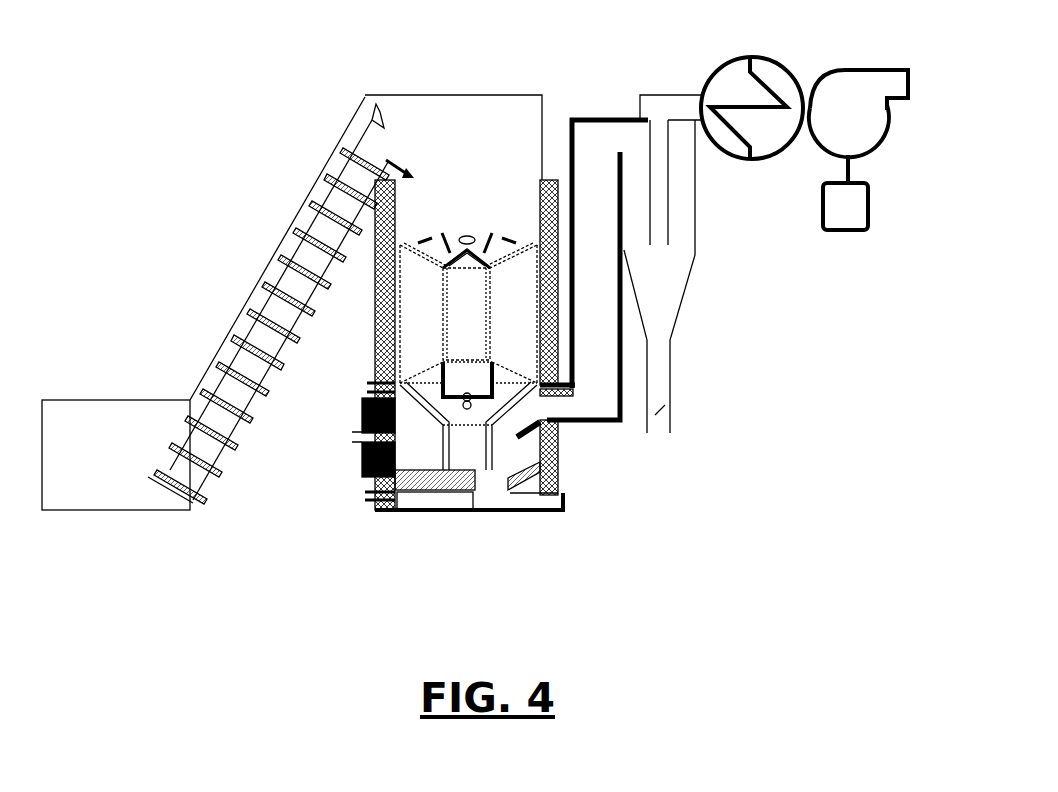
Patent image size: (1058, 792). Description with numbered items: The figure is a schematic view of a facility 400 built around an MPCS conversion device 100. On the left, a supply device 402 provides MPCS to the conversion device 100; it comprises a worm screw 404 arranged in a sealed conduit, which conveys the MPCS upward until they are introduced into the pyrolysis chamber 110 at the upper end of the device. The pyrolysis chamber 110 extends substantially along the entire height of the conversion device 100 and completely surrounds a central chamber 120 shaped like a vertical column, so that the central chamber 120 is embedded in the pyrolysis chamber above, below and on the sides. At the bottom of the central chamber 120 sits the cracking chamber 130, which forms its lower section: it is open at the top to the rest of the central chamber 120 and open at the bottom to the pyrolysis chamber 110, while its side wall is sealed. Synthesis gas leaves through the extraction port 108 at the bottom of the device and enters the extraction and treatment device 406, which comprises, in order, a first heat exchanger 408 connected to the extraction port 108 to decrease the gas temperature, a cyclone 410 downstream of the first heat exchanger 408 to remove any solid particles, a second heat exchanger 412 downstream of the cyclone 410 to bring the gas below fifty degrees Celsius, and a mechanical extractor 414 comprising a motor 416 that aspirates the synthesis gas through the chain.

The facility 400 is at (112, 117).
The supply device 402 is at (232, 263).
The worm screw 404 is at (323, 200).
The conversion device 100 is at (470, 82).
The pyrolysis chamber 110 is at (450, 201).
The central chamber 120 is at (454, 323).
The cracking chamber 130 is at (467, 385).
The extraction port 108 is at (552, 411).
The extraction and treatment device 406 is at (665, 70).
The first heat exchanger 408 is at (571, 296).
The cyclone 410 is at (645, 276).
The second heat exchanger 412 is at (752, 108).
The mechanical extractor 414 is at (858, 113).
The motor 416 is at (820, 212).